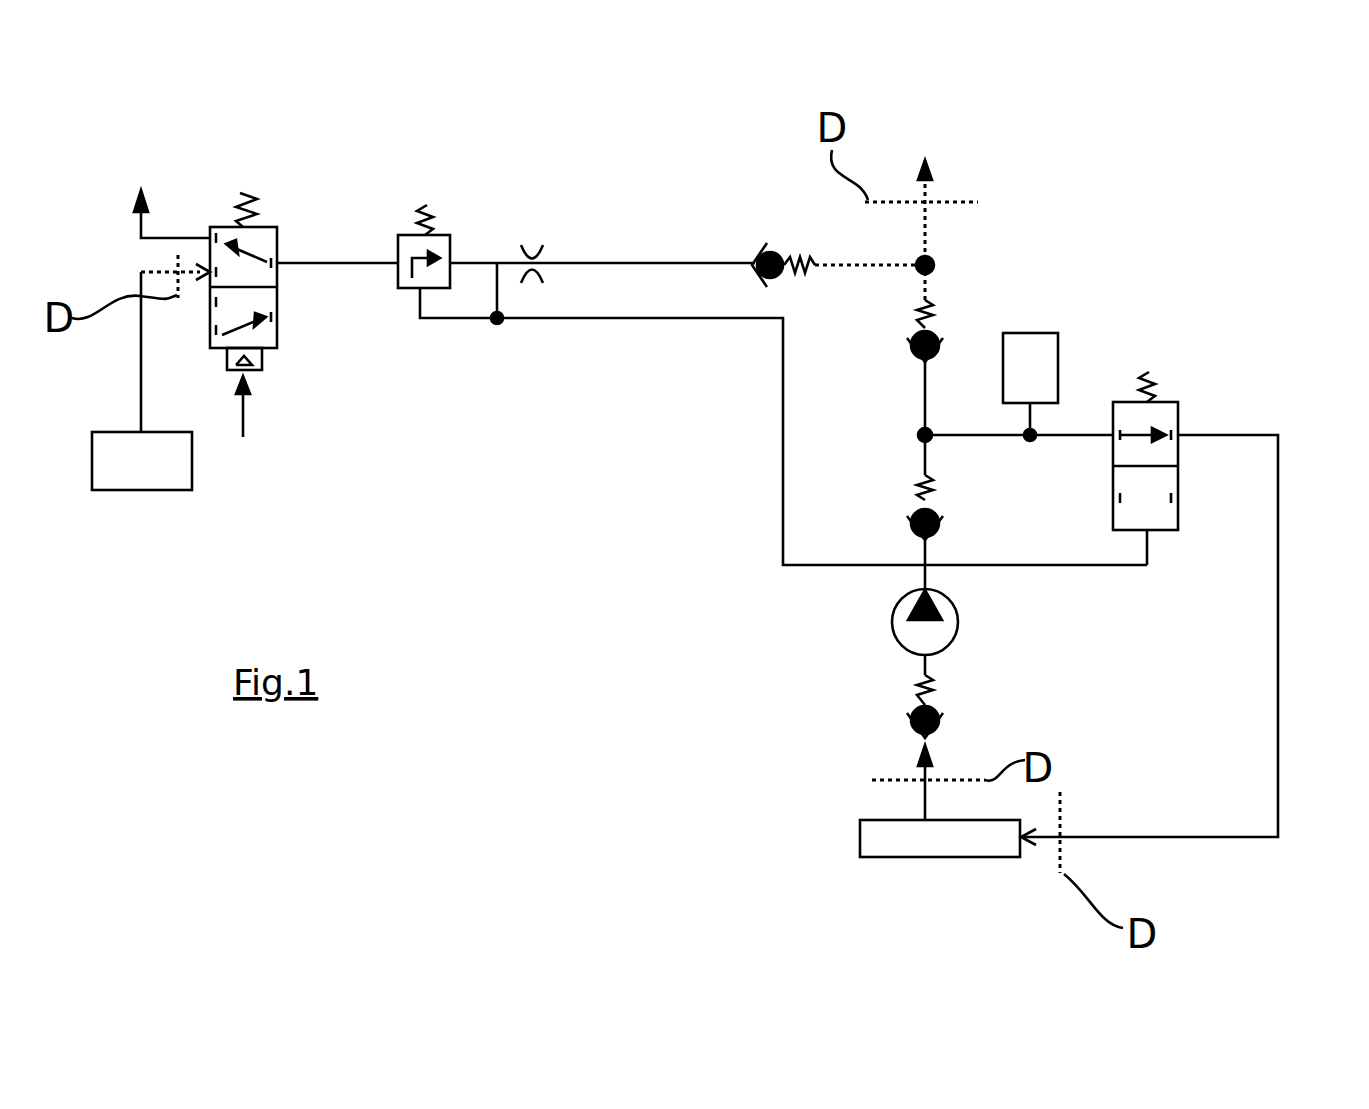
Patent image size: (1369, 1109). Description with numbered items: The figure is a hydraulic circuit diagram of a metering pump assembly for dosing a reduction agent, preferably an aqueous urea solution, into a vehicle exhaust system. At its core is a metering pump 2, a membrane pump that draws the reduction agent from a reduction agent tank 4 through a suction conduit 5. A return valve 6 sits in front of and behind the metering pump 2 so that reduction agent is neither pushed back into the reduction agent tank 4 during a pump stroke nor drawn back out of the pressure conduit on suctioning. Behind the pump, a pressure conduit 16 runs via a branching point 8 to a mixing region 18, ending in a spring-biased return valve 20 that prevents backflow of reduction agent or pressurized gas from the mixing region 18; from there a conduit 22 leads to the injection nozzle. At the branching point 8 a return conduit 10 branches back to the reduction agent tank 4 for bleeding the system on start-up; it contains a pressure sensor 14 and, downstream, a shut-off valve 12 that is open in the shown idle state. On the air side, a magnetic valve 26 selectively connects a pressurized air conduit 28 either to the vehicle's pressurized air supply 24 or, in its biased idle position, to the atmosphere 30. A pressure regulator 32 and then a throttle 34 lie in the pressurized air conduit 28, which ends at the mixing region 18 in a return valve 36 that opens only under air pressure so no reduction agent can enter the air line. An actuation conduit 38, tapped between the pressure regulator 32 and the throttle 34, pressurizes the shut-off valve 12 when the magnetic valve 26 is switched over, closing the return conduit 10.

The metering pump 2 is at (957, 628).
The reduction agent tank 4 is at (995, 850).
The suction conduit 5 is at (925, 803).
The return valve 6 is at (947, 517).
The branching point 8 is at (925, 432).
The return conduit 10 is at (1278, 600).
The shut-off valve 12 is at (1150, 402).
The pressure sensor 14 is at (1050, 368).
The pressure conduit 16 is at (925, 392).
The mixing region 18 is at (947, 265).
The return valve 20 is at (945, 338).
The conduit 22 is at (930, 225).
The pressurized air supply 24 is at (180, 490).
The magnetic valve 26 is at (265, 227).
The pressurized air conduit 28 is at (622, 263).
The atmosphere 30 is at (163, 185).
The pressure regulator 32 is at (427, 205).
The throttle 34 is at (532, 247).
The return valve 36 is at (768, 243).
The actuation conduit 38 is at (783, 508).